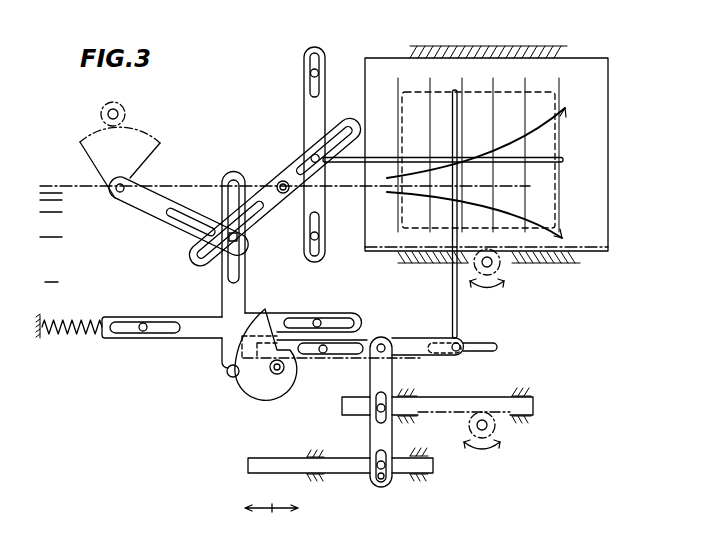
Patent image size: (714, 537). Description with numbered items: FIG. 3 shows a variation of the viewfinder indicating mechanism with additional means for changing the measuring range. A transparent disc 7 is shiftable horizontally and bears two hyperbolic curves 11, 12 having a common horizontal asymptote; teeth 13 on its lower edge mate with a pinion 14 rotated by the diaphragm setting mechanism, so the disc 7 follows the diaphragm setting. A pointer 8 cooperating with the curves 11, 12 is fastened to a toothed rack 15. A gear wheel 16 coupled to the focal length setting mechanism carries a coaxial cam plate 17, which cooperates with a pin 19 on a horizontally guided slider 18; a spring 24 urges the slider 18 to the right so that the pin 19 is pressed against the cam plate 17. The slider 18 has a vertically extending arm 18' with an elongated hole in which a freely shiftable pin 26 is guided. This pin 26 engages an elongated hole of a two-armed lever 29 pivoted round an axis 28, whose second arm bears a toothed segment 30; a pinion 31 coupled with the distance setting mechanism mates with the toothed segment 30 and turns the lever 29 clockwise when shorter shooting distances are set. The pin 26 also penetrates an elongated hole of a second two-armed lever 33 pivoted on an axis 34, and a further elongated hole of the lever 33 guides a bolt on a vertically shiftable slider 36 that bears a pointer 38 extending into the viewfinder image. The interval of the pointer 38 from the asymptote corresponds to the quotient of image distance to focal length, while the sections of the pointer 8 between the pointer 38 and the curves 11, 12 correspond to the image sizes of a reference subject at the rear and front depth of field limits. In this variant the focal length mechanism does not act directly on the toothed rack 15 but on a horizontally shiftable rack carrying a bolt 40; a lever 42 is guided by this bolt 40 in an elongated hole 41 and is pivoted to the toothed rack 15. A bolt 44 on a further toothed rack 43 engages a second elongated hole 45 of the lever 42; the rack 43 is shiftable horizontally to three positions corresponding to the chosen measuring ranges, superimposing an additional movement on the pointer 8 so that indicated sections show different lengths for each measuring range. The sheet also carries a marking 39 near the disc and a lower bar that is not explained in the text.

The transparent disc 7 is at (598, 78).
The pointer 8 is at (452, 302).
The hyperbolic curve 11 is at (566, 110).
The hyperbolic curve 12 is at (488, 217).
The teeth 13 is at (580, 266).
The pinion 14 is at (500, 269).
The toothed rack 15 is at (321, 360).
The gear wheel 16 is at (279, 372).
The cam plate 17 is at (258, 389).
The slider 18 is at (165, 342).
The vertically extending arm 18' is at (214, 245).
The pin 19 is at (229, 376).
The spring 24 is at (75, 336).
The pin 26 is at (242, 241).
The axis 28 is at (116, 194).
The two-armed lever 29 is at (143, 210).
The toothed segment 30 is at (102, 131).
The pinion 31 is at (122, 106).
The two-armed lever 33 is at (296, 165).
The axis 34 is at (279, 181).
The slider 36 is at (306, 108).
The pointer 38 is at (382, 156).
The pivoted bar 39 is at (486, 397).
The bolt 40 is at (377, 411).
The elongated hole 41 is at (374, 393).
The lever 42 is at (388, 372).
The toothed rack 43 is at (285, 464).
The bolt 44 is at (374, 474).
The elongated hole 45 is at (383, 486).